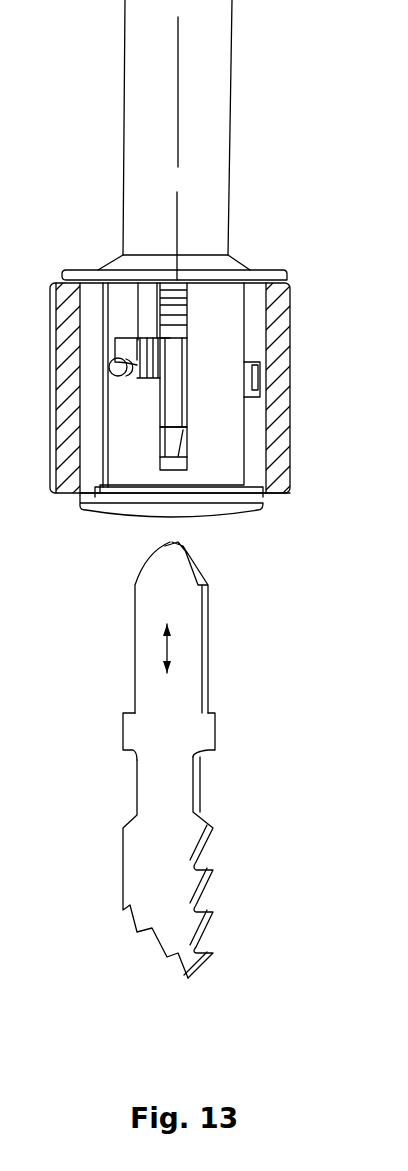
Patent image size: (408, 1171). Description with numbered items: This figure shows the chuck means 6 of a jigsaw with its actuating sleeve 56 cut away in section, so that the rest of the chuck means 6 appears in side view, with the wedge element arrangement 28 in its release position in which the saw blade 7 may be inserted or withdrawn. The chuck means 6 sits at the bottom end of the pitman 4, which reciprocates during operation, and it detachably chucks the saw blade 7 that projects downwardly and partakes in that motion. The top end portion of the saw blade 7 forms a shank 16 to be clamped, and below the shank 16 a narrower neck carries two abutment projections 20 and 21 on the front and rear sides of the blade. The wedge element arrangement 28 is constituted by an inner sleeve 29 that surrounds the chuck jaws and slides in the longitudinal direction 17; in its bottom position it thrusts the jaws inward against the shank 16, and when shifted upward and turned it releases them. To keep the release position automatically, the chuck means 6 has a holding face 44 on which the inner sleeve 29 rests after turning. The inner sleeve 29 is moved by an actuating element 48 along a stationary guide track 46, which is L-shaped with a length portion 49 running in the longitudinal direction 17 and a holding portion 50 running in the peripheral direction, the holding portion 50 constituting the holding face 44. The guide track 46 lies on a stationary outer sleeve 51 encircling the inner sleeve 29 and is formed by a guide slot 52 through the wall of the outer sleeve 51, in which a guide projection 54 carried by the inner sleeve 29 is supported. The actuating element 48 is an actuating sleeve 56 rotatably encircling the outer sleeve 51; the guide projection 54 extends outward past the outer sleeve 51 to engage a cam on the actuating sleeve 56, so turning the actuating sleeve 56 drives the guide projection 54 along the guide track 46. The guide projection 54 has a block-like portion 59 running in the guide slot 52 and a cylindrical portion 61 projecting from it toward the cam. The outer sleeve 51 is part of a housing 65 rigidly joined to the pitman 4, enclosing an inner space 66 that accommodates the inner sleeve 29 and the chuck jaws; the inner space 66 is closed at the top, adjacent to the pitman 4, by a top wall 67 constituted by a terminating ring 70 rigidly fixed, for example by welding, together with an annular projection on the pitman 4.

The pitman 4 is at (233, 34).
The chuck means 6 is at (207, 420).
The saw blade 7 is at (138, 879).
The shank 16 is at (210, 664).
The longitudinal direction 17 is at (163, 653).
The abutment projection 20 is at (215, 734).
The abutment projection 21 is at (123, 731).
The wedge element arrangement 28 is at (264, 378).
The inner sleeve 29 is at (264, 378).
The holding face 44 is at (90, 404).
The guide track 46 is at (275, 389).
The actuating element 48 is at (320, 388).
The length portion 49 is at (185, 408).
The holding portion 50 is at (146, 381).
The outer sleeve 51 is at (248, 270).
The guide slot 52 is at (186, 391).
The guide projection 54 is at (123, 345).
The actuating sleeve 56 is at (290, 432).
The block-like portion 59 is at (138, 283).
The cylindrical portion 61 is at (111, 369).
The housing 65 is at (264, 516).
The inner space 66 is at (86, 469).
The top wall 67 is at (215, 323).
The terminating ring 70 is at (285, 279).